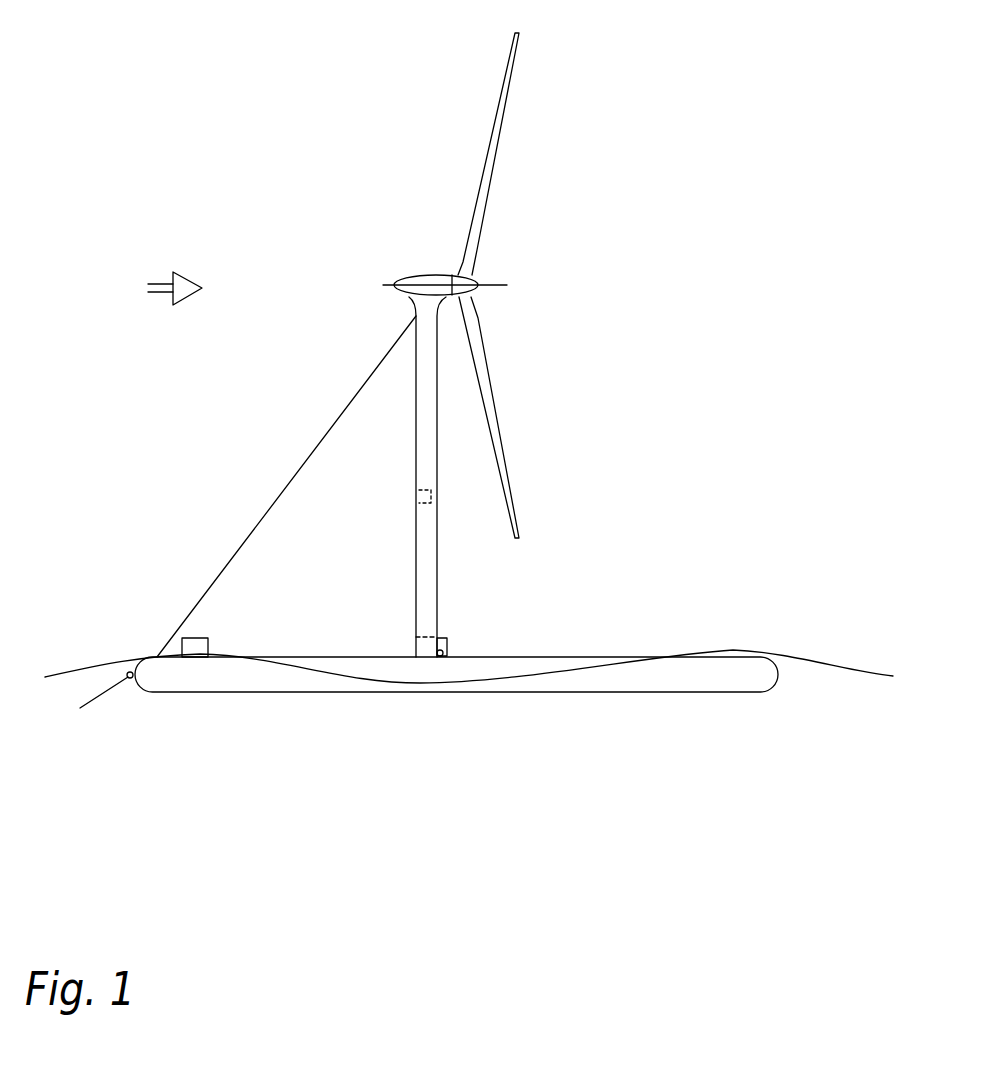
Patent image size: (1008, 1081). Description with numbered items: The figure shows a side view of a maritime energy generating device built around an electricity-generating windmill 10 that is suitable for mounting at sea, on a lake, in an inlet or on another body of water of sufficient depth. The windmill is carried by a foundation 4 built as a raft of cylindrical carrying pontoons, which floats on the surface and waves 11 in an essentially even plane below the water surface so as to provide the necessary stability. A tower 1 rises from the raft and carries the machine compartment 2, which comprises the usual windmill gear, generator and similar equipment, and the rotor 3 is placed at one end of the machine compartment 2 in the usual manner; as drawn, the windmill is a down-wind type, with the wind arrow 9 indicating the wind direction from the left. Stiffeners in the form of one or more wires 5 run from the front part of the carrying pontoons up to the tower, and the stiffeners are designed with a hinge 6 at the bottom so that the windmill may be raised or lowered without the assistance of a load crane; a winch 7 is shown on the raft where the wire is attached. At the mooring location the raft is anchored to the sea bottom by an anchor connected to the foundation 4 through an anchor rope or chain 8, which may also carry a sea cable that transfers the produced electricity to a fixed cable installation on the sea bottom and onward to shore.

The tower 1 is at (436, 579).
The machine compartment 2 is at (427, 275).
The rotor 3 is at (497, 420).
The foundation 4 is at (698, 692).
The wires 5 is at (315, 447).
The hinge 6 is at (447, 643).
The winch 7 is at (208, 640).
The anchor rope or chain 8 is at (102, 695).
The wind arrow 9 is at (202, 277).
The windmill 10 is at (531, 272).
The surface/the waves 11 is at (815, 663).